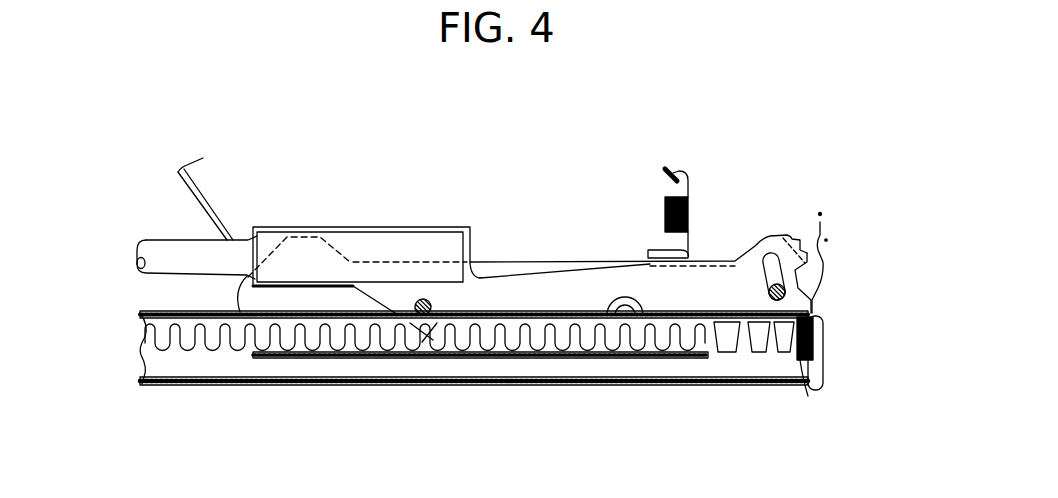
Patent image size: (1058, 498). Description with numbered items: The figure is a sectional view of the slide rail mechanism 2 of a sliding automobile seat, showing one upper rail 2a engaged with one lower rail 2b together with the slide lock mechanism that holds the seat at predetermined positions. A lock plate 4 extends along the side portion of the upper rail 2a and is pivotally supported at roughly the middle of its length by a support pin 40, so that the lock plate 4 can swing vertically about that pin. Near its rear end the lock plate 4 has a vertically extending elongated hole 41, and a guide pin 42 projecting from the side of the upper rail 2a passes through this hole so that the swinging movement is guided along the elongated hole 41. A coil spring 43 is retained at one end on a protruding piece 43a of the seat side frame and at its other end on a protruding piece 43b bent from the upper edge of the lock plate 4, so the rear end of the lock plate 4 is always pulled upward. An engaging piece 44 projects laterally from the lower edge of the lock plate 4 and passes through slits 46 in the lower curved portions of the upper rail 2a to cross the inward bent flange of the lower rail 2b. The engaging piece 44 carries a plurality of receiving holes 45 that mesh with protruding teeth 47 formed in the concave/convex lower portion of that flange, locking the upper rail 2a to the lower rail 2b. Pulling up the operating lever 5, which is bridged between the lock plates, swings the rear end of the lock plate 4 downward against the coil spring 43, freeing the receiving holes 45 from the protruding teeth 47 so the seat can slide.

The slide rail mechanism 2 is at (480, 388).
The upper rail 2a is at (513, 262).
The lower rail 2b is at (541, 388).
The lock plate 4 is at (560, 270).
The operating lever 5 is at (170, 247).
The support pin 40 is at (410, 313).
The elongated hole 41 is at (771, 258).
The guide pin 42 is at (766, 293).
The coil spring 43 is at (692, 210).
The protruding piece 43a is at (675, 167).
The protruding piece 43b is at (656, 248).
The engaging piece 44 is at (748, 354).
The receiving holes 45 is at (779, 354).
The slits 46 is at (809, 392).
The protruding teeth 47 is at (722, 354).